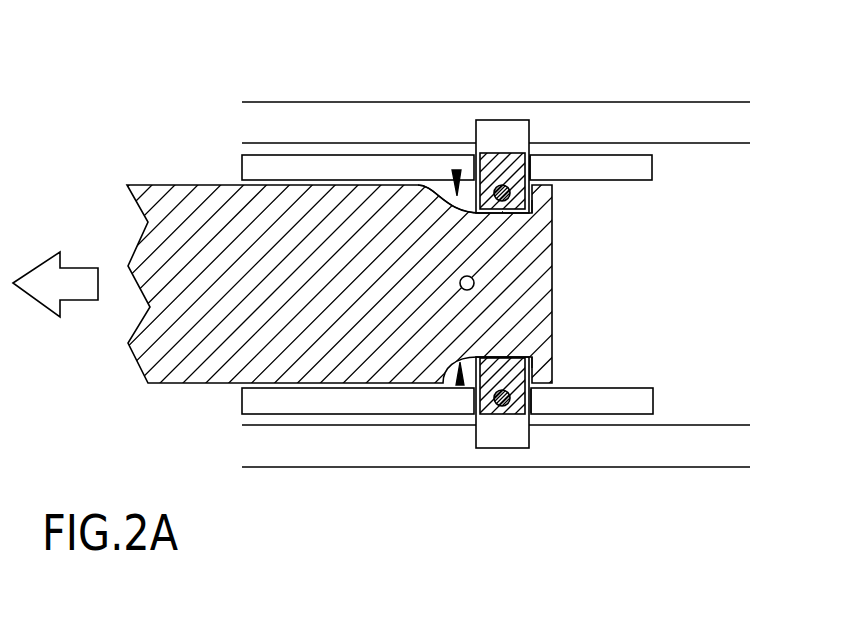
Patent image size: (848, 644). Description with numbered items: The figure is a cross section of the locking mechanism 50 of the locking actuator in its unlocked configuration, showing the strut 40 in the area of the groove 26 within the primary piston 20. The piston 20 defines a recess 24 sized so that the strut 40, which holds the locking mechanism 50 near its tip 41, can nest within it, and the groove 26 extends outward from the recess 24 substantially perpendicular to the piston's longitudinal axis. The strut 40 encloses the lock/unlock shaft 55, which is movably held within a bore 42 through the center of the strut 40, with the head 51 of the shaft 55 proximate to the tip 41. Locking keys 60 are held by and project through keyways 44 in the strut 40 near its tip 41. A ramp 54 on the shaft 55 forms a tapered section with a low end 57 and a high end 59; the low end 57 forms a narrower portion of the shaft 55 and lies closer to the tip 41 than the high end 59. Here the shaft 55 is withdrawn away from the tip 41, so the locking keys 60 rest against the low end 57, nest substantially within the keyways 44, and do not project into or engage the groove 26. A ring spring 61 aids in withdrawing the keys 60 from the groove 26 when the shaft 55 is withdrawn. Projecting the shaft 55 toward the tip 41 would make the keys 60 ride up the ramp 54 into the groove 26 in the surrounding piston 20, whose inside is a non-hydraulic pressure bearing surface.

The primary piston 20 is at (618, 118).
The recess 24 is at (702, 150).
The groove 26 is at (510, 120).
The strut 40 is at (628, 165).
The tip 41 is at (663, 403).
The bore 42 is at (667, 323).
The keyways 44 is at (530, 168).
The locking mechanism 50 is at (377, 446).
The head 51 is at (473, 288).
The ramp 54 is at (456, 170).
The lock/unlock shaft 55 is at (147, 218).
The low end 57 is at (502, 213).
The high end 59 is at (420, 185).
The locking keys 60 is at (492, 153).
The ring spring 61 is at (531, 212).